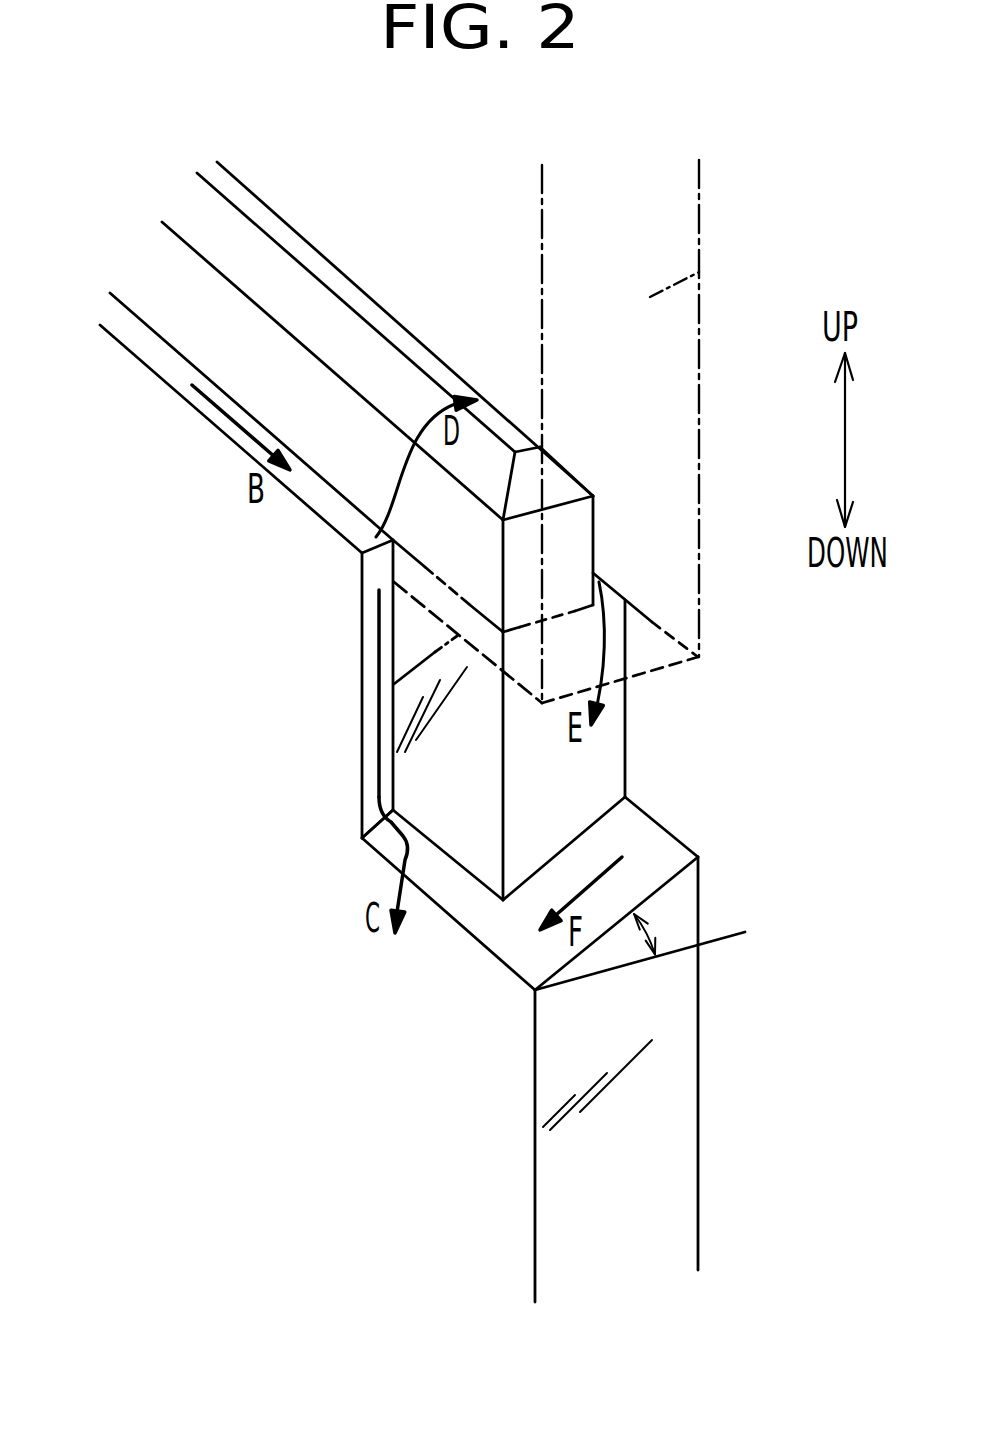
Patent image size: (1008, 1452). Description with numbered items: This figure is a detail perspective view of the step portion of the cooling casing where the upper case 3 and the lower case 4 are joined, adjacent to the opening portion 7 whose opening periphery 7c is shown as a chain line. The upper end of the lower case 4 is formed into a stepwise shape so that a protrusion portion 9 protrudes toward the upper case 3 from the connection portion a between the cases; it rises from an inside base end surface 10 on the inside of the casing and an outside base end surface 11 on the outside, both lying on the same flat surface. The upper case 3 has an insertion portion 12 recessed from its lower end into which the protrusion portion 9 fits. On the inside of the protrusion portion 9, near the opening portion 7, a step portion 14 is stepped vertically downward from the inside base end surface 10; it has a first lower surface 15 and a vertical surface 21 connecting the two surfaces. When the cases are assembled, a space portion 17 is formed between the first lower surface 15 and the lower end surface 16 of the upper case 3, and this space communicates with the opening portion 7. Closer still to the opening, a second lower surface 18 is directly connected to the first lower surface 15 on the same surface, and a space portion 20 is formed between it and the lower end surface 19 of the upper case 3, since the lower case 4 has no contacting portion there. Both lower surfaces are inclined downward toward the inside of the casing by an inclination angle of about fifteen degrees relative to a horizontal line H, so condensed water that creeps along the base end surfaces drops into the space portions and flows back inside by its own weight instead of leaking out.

The upper case 3 is at (450, 298).
The lower case 4 is at (495, 1167).
The opening portion 7 is at (705, 828).
The opening periphery 7c is at (700, 272).
The protrusion portion 9 is at (617, 525).
The inside base end surface 10 is at (327, 503).
The outside base end surface 11 is at (600, 592).
The insertion portion 12 is at (568, 476).
The step portion 14 is at (431, 808).
The first lower surface 15 is at (430, 877).
The lower end surface 16 is at (394, 684).
The space portion 17 is at (465, 782).
The second lower surface 18 is at (645, 877).
The lower end surface 19 is at (645, 673).
The space portion 20 is at (647, 733).
The vertical surface 21 is at (367, 627).
The connection portion a is at (612, 585).
The horizontal line H is at (678, 952).